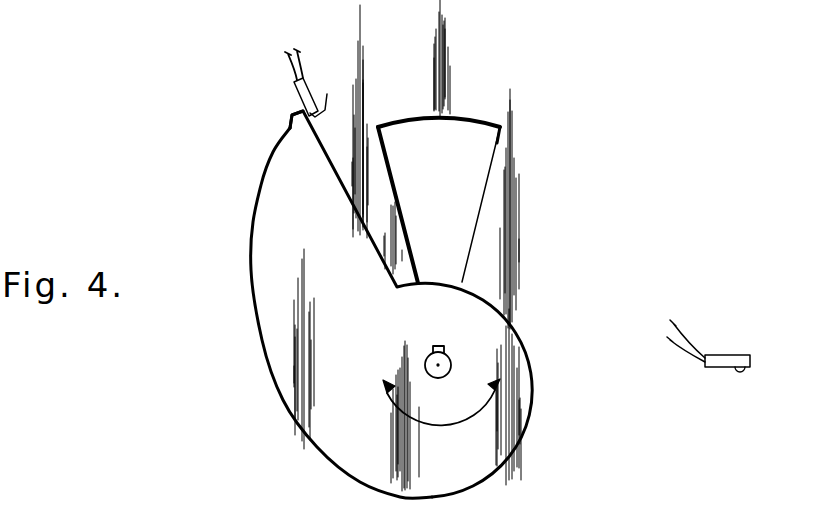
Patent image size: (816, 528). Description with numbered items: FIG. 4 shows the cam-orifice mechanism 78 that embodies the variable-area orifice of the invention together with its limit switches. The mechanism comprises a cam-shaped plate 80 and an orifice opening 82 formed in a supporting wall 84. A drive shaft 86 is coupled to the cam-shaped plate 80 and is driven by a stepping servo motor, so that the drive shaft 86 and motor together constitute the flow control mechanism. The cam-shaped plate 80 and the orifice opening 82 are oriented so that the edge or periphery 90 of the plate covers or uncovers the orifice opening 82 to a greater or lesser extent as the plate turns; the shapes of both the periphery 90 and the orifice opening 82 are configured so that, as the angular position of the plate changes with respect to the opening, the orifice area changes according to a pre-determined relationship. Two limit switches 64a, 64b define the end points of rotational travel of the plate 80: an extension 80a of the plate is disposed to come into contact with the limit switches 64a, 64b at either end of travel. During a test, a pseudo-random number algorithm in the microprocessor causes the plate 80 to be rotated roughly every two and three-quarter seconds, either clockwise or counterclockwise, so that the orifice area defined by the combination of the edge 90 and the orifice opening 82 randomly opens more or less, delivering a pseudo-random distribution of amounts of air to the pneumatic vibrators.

The limit switch 64a is at (316, 83).
The limit switch 64b is at (708, 366).
The cam-orifice mechanism 78 is at (514, 276).
The cam-shaped plate 80 is at (270, 332).
The extension 80a is at (290, 127).
The orifice opening 82 is at (497, 151).
The supporting wall 84 is at (450, 56).
The drive shaft 86 is at (451, 362).
The edge or periphery 90 is at (497, 468).